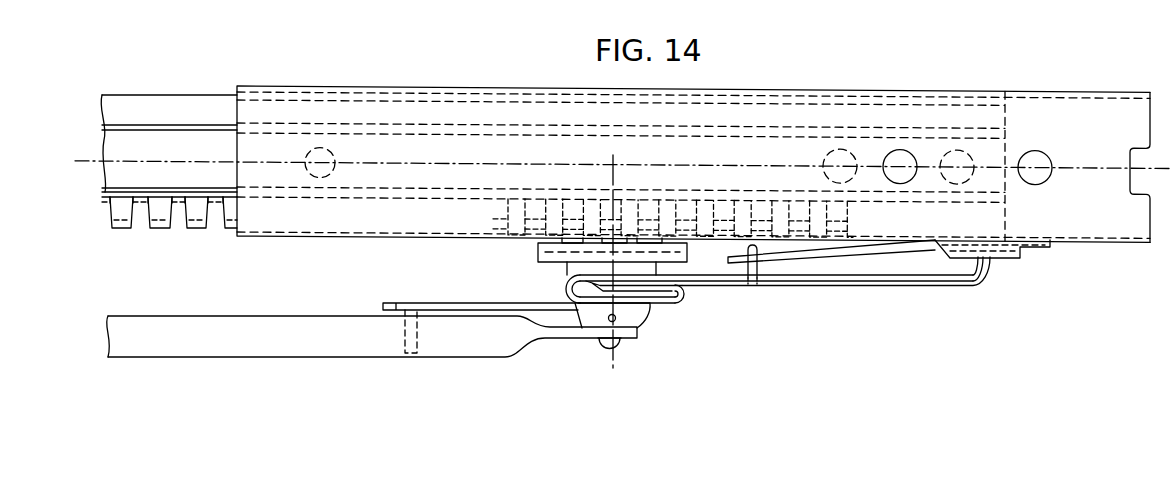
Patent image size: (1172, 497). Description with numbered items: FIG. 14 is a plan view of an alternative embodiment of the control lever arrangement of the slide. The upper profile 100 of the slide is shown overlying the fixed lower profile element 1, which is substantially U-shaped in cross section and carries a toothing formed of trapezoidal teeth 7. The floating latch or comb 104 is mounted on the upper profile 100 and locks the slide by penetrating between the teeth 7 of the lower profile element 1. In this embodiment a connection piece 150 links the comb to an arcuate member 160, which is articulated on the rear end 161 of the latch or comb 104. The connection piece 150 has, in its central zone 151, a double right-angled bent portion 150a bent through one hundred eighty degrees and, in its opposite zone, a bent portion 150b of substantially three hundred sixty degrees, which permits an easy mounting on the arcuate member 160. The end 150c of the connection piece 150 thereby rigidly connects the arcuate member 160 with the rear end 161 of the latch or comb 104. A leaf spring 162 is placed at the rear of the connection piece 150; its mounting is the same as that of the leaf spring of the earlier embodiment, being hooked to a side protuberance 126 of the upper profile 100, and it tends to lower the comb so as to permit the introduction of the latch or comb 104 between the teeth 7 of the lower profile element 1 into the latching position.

The fixed lower profile element 1 is at (172, 146).
The upper profile 100 is at (262, 108).
The tooth 7 is at (165, 210).
The floating latch or comb 104 is at (636, 320).
The side protuberance 126 is at (1023, 258).
The connection piece 150 is at (729, 329).
The double right angled bent portion 150a is at (688, 302).
The bent portion 150b is at (573, 292).
The end of the connection piece 150c is at (383, 303).
The central zone 151 is at (657, 313).
The arcuate member 160 is at (352, 350).
The rear end of the latch or comb 161 is at (605, 350).
The leaf spring 162 is at (912, 252).